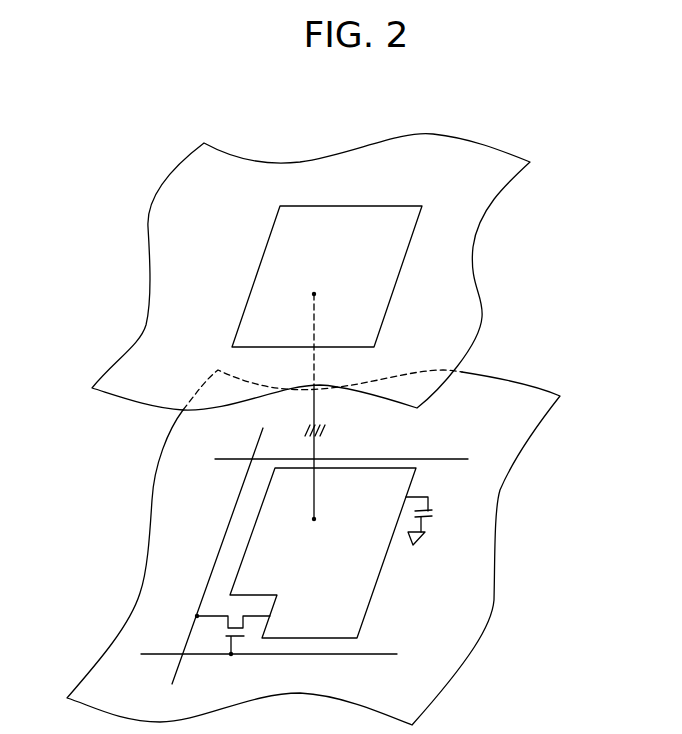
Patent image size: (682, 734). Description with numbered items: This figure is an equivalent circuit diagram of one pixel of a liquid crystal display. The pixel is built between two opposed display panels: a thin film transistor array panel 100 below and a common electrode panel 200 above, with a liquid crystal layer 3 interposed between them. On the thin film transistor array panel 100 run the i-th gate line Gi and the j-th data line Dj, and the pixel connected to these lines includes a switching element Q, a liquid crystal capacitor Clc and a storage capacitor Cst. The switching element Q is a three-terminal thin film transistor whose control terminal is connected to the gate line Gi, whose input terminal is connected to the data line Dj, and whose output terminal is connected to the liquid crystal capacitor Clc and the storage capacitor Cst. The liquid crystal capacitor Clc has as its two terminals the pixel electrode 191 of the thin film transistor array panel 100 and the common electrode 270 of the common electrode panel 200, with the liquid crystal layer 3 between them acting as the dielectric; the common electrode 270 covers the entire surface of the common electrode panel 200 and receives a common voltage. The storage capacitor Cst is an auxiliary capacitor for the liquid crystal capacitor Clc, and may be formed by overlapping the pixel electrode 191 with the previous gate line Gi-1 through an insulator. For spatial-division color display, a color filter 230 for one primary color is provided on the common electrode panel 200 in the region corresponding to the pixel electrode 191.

The liquid crystal layer 3 is at (249, 534).
The thin film transistor array panel 100 is at (307, 547).
The pixel electrode 191 is at (375, 592).
The common electrode panel 200 is at (329, 272).
The color filter 230 is at (397, 287).
The common electrode 270 is at (474, 253).
The liquid crystal capacitor Clc is at (331, 453).
The storage capacitor Cst is at (435, 521).
The switching element Q is at (232, 635).
The gate line Gi is at (269, 641).
The previous gate line Gi-1 is at (330, 471).
The data line Dj is at (217, 556).